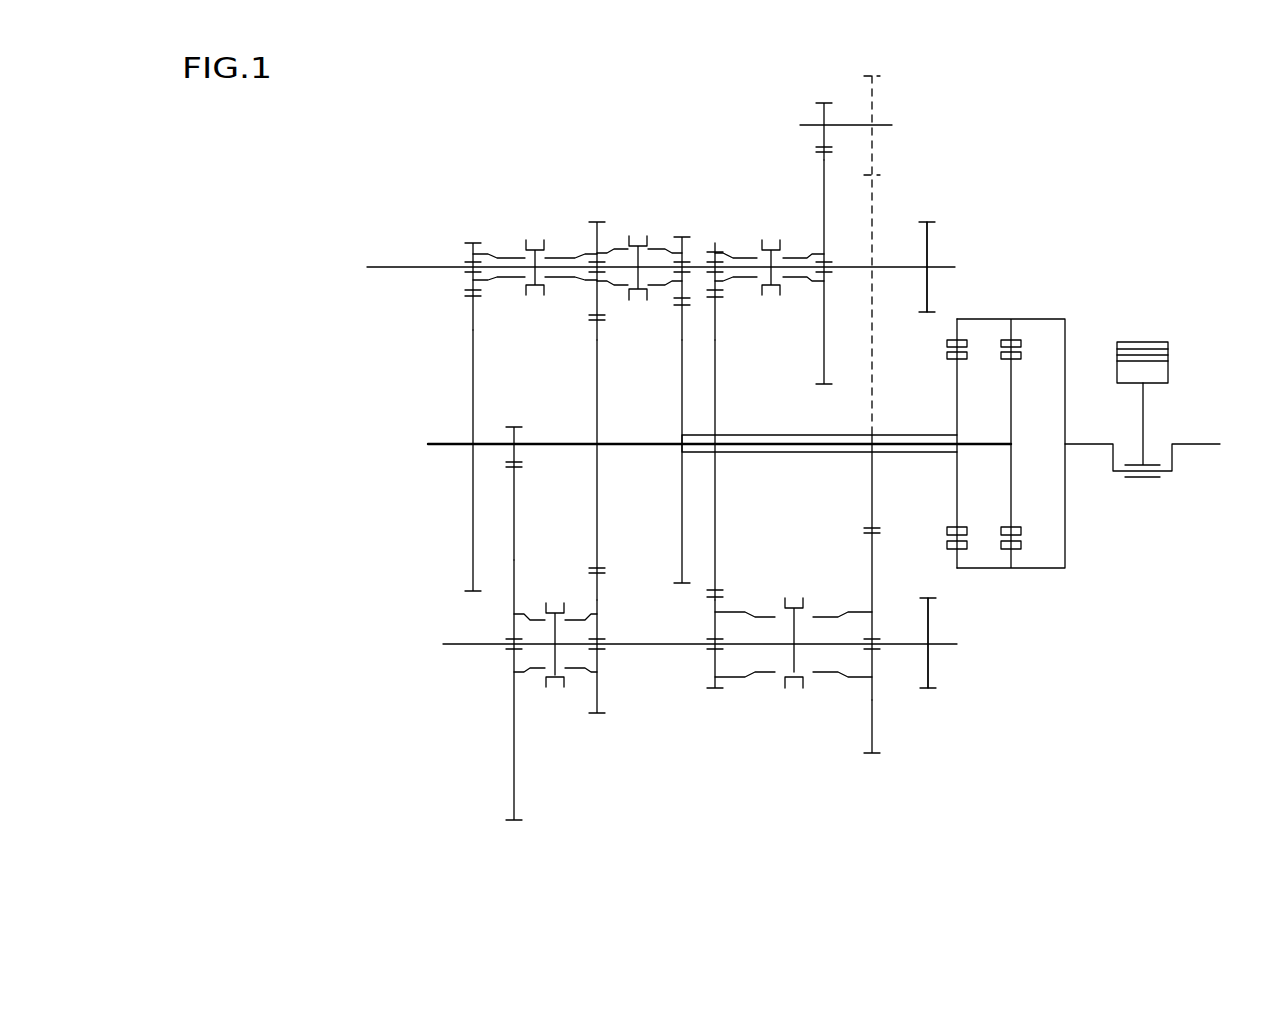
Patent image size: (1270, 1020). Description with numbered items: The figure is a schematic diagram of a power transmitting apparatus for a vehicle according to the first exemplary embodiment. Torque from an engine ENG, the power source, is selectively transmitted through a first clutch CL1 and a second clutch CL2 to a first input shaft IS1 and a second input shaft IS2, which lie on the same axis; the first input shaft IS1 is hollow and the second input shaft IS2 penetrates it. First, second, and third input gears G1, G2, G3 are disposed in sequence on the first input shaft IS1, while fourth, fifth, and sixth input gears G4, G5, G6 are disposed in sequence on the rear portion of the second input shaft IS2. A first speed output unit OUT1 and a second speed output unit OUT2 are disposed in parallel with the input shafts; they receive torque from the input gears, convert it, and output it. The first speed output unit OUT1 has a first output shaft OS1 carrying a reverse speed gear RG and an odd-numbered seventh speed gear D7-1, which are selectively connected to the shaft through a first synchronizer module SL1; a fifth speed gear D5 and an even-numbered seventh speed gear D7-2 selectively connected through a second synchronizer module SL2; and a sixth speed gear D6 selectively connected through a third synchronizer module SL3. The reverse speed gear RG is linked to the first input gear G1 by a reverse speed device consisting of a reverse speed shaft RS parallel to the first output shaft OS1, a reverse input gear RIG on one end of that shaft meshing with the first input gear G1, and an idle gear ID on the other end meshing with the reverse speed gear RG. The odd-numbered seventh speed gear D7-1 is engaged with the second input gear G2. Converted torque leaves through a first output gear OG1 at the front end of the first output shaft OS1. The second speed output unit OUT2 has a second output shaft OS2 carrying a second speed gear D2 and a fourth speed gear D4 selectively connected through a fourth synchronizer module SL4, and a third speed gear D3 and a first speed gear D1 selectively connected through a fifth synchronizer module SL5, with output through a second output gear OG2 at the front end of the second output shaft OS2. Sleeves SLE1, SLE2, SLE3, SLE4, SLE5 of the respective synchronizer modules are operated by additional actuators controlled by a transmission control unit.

The first speed output unit OUT1 is at (369, 287).
The second speed output unit OUT2 is at (424, 655).
The first input shaft IS1 is at (913, 434).
The second input shaft IS2 is at (913, 453).
The first clutch CL1 is at (936, 443).
The second clutch CL2 is at (1011, 443).
The engine ENG is at (1160, 333).
The reverse speed shaft RS is at (853, 122).
The idle gear ID is at (823, 118).
The reverse speed gear RG is at (823, 172).
The reverse input gear RIG is at (875, 98).
The first output shaft OS1 is at (892, 263).
The second output shaft OS2 is at (903, 648).
The first output gear OG1 is at (930, 243).
The second output gear OG2 is at (933, 663).
The first input gear G1 is at (871, 492).
The second input gear G2 is at (717, 515).
The third input gear G3 is at (682, 534).
The fourth input gear G4 is at (599, 487).
The fifth input gear G5 is at (517, 451).
The sixth input gear G6 is at (473, 508).
The first speed gear D1 is at (516, 792).
The second speed gear D2 is at (873, 737).
The third speed gear D3 is at (598, 696).
The fourth speed gear D4 is at (714, 688).
The fifth speed gear D5 is at (596, 242).
The sixth speed gear D6 is at (678, 238).
The odd-numbered seventh speed gear D7-1 is at (708, 243).
The even-numbered seventh speed gear D7-2 is at (468, 250).
The first synchronizer module SL1 is at (737, 196).
The second synchronizer module SL2 is at (491, 212).
The third synchronizer module SL3 is at (656, 201).
The fourth synchronizer module SL4 is at (820, 724).
The fifth synchronizer module SL5 is at (589, 730).
The sleeve SLE1 is at (771, 243).
The sleeve SLE2 is at (535, 247).
The sleeve SLE3 is at (638, 236).
The sleeve SLE4 is at (796, 687).
The sleeve SLE5 is at (558, 686).